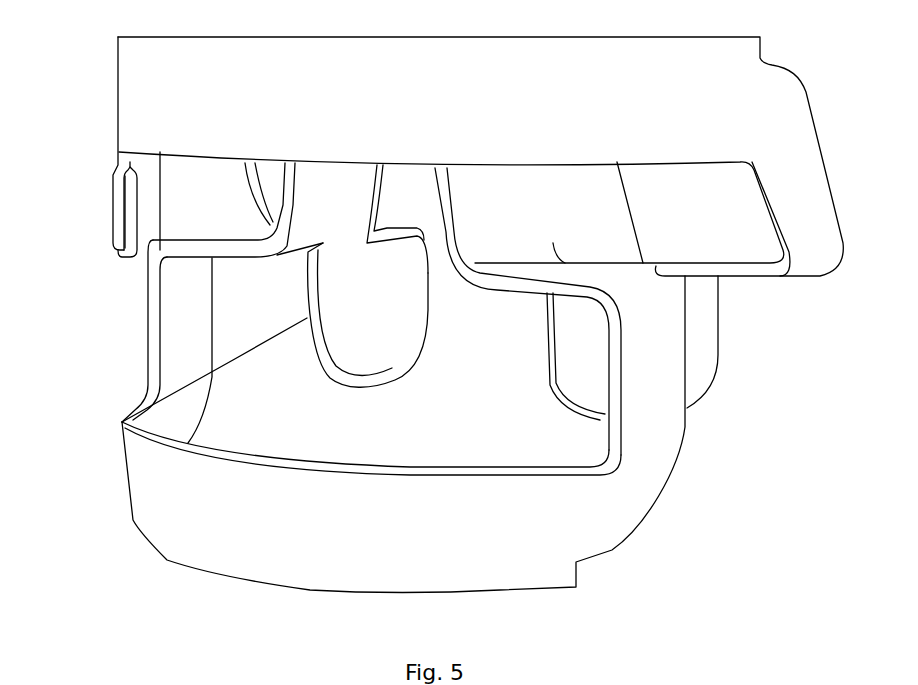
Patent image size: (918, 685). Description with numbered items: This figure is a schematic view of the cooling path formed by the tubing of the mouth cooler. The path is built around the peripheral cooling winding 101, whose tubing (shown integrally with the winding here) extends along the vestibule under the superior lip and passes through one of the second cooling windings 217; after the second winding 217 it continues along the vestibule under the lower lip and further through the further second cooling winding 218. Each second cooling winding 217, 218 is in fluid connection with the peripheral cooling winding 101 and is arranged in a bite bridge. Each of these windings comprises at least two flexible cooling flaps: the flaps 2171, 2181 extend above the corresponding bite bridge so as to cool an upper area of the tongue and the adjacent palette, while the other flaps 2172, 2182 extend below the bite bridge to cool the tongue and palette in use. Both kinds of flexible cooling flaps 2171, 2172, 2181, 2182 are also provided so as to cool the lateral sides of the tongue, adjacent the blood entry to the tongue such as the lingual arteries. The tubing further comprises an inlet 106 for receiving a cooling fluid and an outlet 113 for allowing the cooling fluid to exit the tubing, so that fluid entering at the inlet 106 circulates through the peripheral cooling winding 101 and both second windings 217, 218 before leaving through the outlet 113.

The peripheral cooling winding 101 is at (213, 102).
The outlet 113 is at (118, 197).
The inlet 106 is at (127, 213).
The second cooling winding 218 is at (190, 242).
The flexible cooling flap 2181 is at (313, 188).
The flexible cooling flap 2182 is at (123, 422).
The second cooling winding 217 is at (630, 282).
The flexible cooling flap 2171 is at (570, 197).
The flexible cooling flap 2172 is at (585, 382).